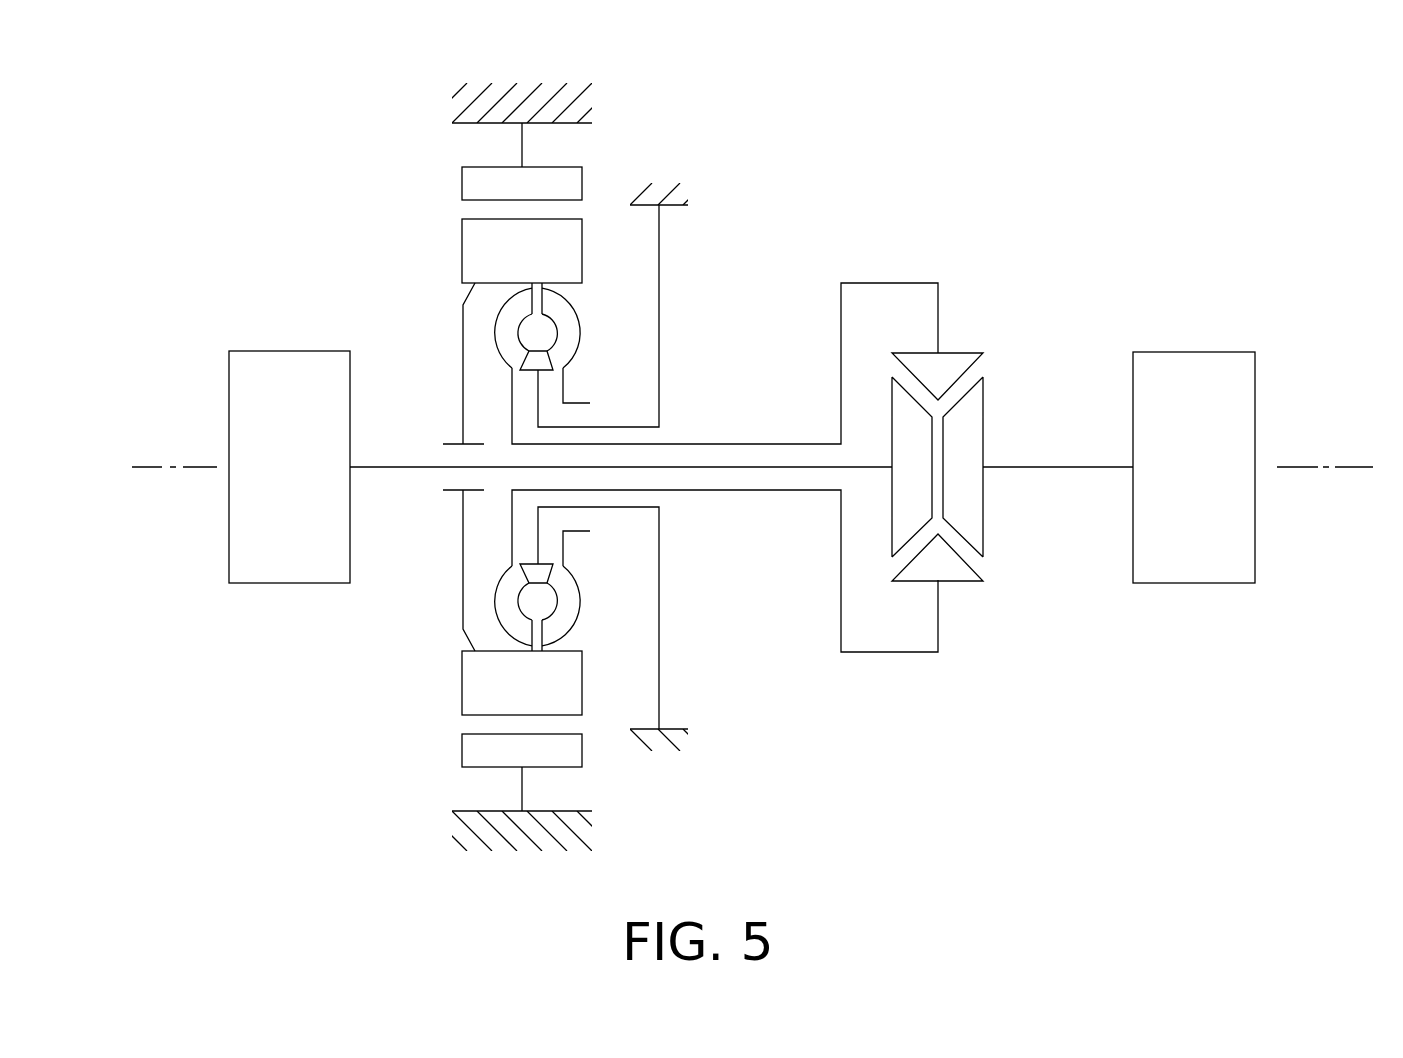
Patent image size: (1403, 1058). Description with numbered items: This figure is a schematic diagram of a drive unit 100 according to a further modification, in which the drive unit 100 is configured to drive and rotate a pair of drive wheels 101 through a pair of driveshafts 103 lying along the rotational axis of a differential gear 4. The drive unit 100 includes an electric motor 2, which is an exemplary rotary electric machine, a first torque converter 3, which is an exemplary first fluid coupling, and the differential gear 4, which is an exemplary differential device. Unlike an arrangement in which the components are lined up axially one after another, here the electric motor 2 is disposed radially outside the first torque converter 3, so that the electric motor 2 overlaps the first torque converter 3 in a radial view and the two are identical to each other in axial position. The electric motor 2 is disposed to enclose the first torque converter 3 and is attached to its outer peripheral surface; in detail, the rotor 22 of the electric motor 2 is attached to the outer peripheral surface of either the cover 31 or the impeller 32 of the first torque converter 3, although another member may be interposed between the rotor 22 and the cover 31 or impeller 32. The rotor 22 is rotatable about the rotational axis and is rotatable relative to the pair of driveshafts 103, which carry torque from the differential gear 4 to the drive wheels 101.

The drive unit 100 is at (842, 157).
The electric motor 2 is at (447, 192).
The rotor 22 is at (470, 242).
The first torque converter 3 is at (602, 302).
The cover 31 is at (465, 303).
The impeller 32 is at (575, 305).
The differential gear 4 is at (985, 318).
The drive wheels 101 is at (265, 583).
The driveshafts 103 is at (393, 467).